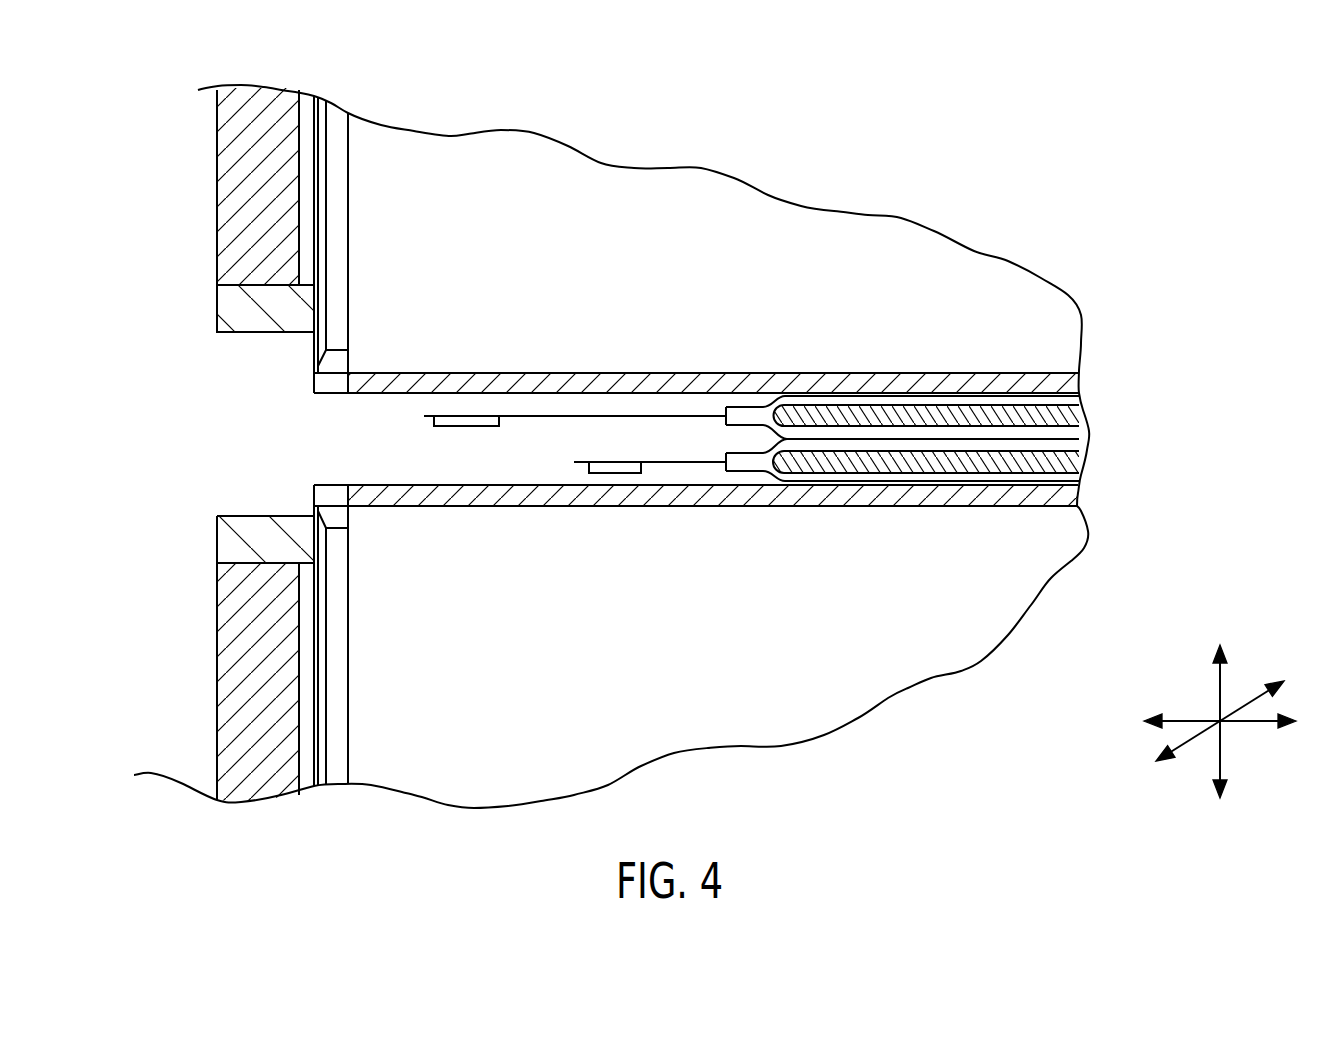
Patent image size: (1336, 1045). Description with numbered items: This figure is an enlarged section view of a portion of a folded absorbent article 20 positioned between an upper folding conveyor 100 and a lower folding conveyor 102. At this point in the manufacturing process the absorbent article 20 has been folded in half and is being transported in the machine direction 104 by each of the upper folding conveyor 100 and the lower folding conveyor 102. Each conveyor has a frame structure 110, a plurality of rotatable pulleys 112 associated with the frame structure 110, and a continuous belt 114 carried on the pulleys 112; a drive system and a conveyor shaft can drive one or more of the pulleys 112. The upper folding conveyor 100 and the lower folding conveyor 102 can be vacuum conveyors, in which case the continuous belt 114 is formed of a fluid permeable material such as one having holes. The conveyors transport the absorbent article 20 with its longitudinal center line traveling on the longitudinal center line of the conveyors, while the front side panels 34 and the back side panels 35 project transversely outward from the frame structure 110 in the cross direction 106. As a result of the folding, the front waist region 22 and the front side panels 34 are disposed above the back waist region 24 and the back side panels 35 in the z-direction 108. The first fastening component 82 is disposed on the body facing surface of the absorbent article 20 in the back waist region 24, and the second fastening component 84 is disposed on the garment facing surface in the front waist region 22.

The absorbent article 20 is at (292, 452).
The front waist region 22 is at (1072, 465).
The back waist region 24 is at (1074, 422).
The front side panels 34 is at (670, 460).
The back side panels 35 is at (580, 414).
The first fastening component 82 is at (443, 428).
The second fastening component 84 is at (588, 476).
The upper folding conveyor 100 is at (775, 224).
The lower folding conveyor 102 is at (877, 679).
The machine direction 104 is at (1183, 748).
The cross direction 106 is at (1255, 727).
The z-direction 108 is at (1224, 678).
The frame structure 110 is at (248, 96).
The rotatable pulleys 112 is at (340, 152).
The continuous belt 114 is at (487, 382).